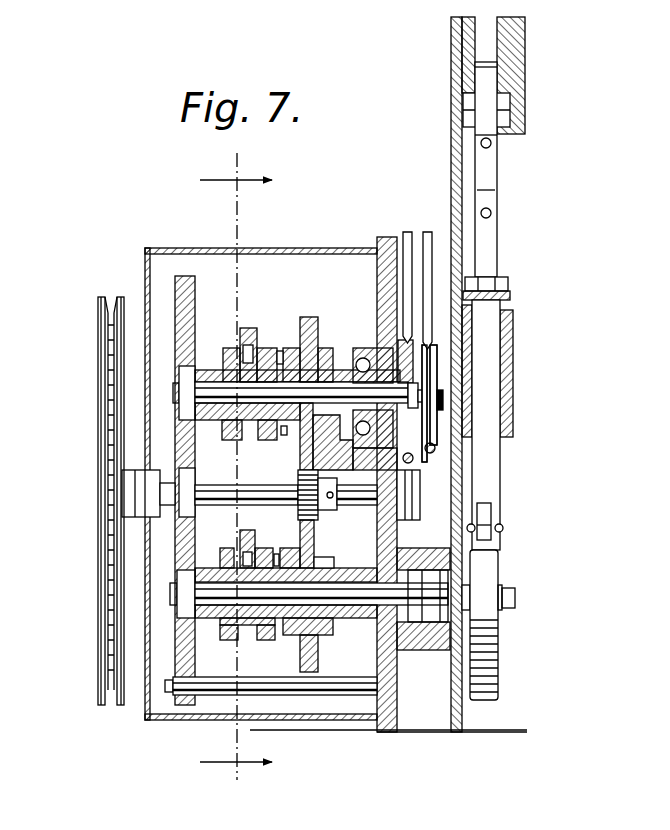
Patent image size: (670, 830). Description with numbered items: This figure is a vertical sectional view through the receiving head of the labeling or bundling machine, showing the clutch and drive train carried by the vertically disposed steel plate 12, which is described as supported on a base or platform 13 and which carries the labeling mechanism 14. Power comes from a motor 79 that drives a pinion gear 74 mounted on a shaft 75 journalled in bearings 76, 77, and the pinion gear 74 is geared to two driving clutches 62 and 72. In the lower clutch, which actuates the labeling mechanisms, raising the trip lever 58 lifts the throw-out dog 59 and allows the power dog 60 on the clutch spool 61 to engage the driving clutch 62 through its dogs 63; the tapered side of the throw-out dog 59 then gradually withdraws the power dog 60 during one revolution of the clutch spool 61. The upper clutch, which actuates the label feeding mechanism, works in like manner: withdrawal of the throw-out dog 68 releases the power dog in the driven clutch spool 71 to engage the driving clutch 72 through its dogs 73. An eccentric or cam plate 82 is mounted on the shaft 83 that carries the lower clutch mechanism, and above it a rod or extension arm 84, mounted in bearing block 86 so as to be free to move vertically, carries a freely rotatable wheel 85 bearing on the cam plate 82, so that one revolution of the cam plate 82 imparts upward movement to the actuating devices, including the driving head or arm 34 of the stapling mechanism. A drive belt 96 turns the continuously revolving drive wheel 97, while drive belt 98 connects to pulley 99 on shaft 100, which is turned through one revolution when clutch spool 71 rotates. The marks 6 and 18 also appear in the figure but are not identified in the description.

The section line 6 is at (197, 474).
The plate 12 is at (451, 152).
The base or platform 13 is at (192, 466).
The labeling mechanism 14 is at (223, 474).
The pulley 18 is at (100, 322).
The driving head or arm 34 is at (497, 164).
The trip lever 58 is at (240, 532).
The throw-out dog 59 is at (232, 552).
The power dog 60 is at (326, 563).
The clutch spool 61 is at (258, 556).
The driving clutch 62 is at (320, 560).
The dogs 63 is at (278, 556).
The throw-out dog 68 is at (247, 344).
The driven clutch spool 71 is at (266, 350).
The driving clutch 72 is at (293, 348).
The dogs 73 is at (283, 436).
The pinion gear 74 is at (318, 480).
The shaft 75 is at (222, 488).
The bearing 76 is at (196, 487).
The bearing 77 is at (377, 478).
The motor 79 is at (282, 350).
The cam plate 82 is at (500, 578).
The shaft 83 is at (212, 598).
The extension arm 84 is at (500, 477).
The freely rotatable wheel 85 is at (493, 545).
The bearing block 86 is at (513, 415).
The drive belt 96 is at (408, 232).
The drive wheel 97 is at (412, 458).
The drive belt 98 is at (430, 232).
The pulley 99 is at (434, 452).
The shaft 100 is at (205, 393).